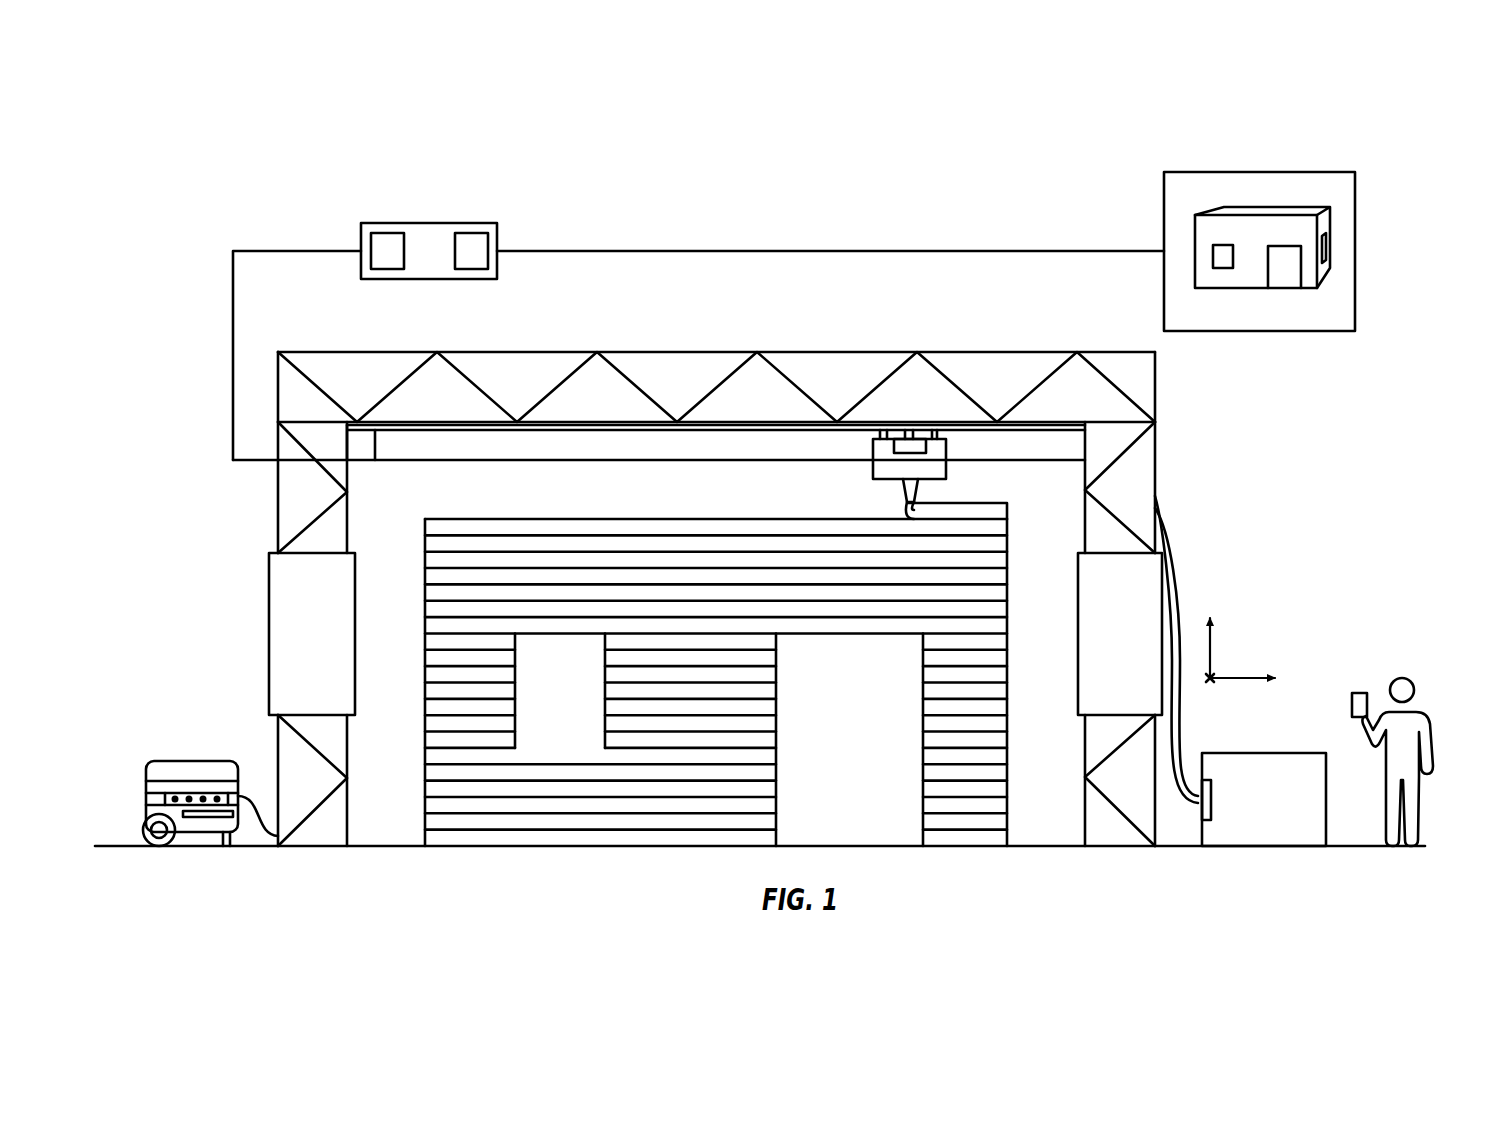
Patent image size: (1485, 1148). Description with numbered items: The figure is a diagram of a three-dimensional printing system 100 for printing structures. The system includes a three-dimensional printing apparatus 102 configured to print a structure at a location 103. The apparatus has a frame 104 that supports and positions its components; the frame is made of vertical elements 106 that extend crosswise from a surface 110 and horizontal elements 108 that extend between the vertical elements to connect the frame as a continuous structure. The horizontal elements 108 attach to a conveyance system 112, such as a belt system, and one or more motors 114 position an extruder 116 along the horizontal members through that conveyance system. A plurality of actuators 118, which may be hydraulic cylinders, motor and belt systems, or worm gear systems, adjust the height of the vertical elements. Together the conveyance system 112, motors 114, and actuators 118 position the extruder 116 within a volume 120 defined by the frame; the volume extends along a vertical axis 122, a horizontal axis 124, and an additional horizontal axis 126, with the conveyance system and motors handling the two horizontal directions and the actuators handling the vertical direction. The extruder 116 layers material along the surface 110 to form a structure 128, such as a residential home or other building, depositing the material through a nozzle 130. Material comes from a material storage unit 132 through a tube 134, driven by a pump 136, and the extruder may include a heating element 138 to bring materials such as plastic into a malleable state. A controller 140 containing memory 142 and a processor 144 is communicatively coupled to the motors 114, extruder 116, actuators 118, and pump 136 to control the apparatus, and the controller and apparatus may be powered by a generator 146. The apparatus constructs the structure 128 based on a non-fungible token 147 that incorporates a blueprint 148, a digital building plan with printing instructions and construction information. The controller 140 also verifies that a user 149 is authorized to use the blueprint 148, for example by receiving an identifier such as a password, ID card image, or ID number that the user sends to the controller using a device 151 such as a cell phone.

The 3D printing system 100 is at (235, 124).
The 3D printing apparatus 102 is at (200, 504).
The location 103 is at (195, 682).
The frame 104 is at (278, 527).
The vertical elements 106 is at (278, 492).
The horizontal elements 108 is at (717, 352).
The surface 110 is at (128, 848).
The conveyance system 112 is at (667, 432).
The motor 114 is at (360, 455).
The extruder 116 is at (946, 458).
The actuators 118 is at (269, 632).
The volume 120 is at (503, 499).
The vertical axis 122 is at (1210, 642).
The horizontal axis 124 is at (1247, 678).
The additional horizontal axis 126 is at (1212, 683).
The structure 128 is at (717, 517).
The nozzle 130 is at (920, 491).
The material storage unit 132 is at (1268, 753).
The tube 134 is at (1178, 592).
The pump 136 is at (1211, 793).
The heating element 138 is at (905, 470).
The controller 140 is at (430, 223).
The memory 142 is at (388, 269).
The processor 144 is at (470, 269).
The generator 146 is at (193, 761).
The non-fungible token 147 is at (1355, 246).
The blueprint 148 is at (1297, 195).
The user 149 is at (1428, 712).
The device 151 is at (1356, 693).